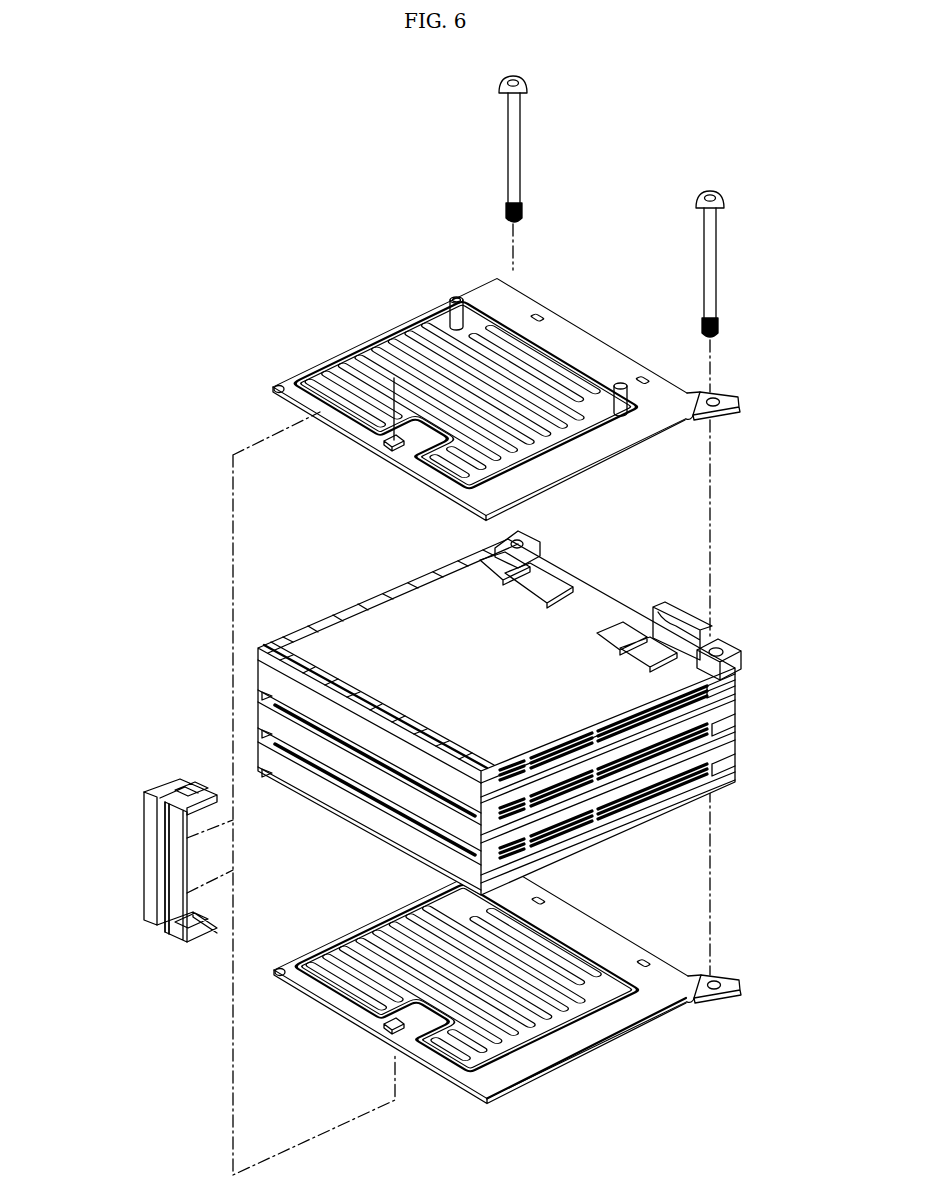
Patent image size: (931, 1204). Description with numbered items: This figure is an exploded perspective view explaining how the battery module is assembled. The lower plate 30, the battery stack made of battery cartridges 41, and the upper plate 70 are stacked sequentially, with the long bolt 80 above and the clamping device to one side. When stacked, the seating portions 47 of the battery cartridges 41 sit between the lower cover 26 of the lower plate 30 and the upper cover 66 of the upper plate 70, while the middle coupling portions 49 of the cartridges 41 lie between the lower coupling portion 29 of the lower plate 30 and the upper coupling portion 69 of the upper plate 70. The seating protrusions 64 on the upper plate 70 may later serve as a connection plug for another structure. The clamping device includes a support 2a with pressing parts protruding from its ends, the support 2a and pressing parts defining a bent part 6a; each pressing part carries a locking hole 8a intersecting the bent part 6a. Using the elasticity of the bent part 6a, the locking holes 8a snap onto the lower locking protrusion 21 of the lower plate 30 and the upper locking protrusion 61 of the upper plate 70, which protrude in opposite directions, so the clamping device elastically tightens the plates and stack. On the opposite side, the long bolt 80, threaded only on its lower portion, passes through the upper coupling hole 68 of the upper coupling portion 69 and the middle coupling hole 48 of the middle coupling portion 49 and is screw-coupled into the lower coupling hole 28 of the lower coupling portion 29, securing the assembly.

The long bolt 80 is at (508, 121).
The seating protrusion 64 is at (452, 297).
The upper plate 70 is at (408, 322).
The upper cover 66 is at (275, 386).
The upper locking protrusion 61 is at (382, 447).
The upper coupling hole 68 is at (716, 398).
The upper coupling portion 69 is at (736, 412).
The seating portion 47 is at (396, 614).
The middle coupling hole 48 is at (717, 651).
The middle coupling portion 49 is at (730, 683).
The battery cartridge 41 is at (547, 713).
The locking hole 8a is at (176, 792).
The bent part 6a is at (162, 868).
The support 2a is at (123, 833).
The lower locking protrusion 21 is at (382, 1030).
The lower coupling hole 28 is at (717, 981).
The lower coupling portion 29 is at (737, 995).
The lower cover 26 is at (613, 1044).
The lower plate 30 is at (562, 1071).